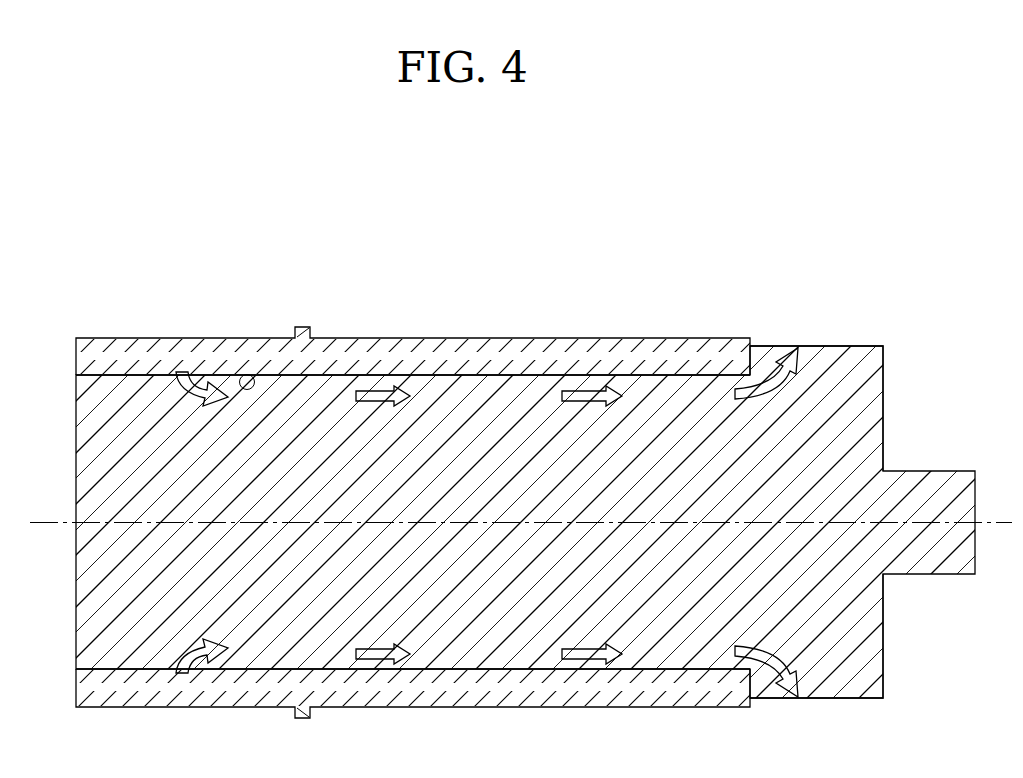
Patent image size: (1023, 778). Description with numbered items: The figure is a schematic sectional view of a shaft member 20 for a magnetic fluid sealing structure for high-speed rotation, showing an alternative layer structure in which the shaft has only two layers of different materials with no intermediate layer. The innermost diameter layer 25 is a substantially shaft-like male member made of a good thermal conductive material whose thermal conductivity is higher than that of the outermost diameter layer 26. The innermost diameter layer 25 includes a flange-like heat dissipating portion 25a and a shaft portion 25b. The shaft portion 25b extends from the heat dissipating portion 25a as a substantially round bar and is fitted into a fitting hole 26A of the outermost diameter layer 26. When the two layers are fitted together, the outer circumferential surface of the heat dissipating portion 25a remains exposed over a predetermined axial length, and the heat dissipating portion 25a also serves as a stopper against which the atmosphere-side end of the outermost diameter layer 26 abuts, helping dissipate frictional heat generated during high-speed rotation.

The shaft member 20 is at (130, 211).
The innermost diameter layer 25 is at (537, 455).
The heat dissipating portion 25a is at (825, 360).
The shaft portion 25b is at (430, 392).
The outermost diameter layer 26 is at (151, 358).
The fitting hole 26A is at (256, 385).